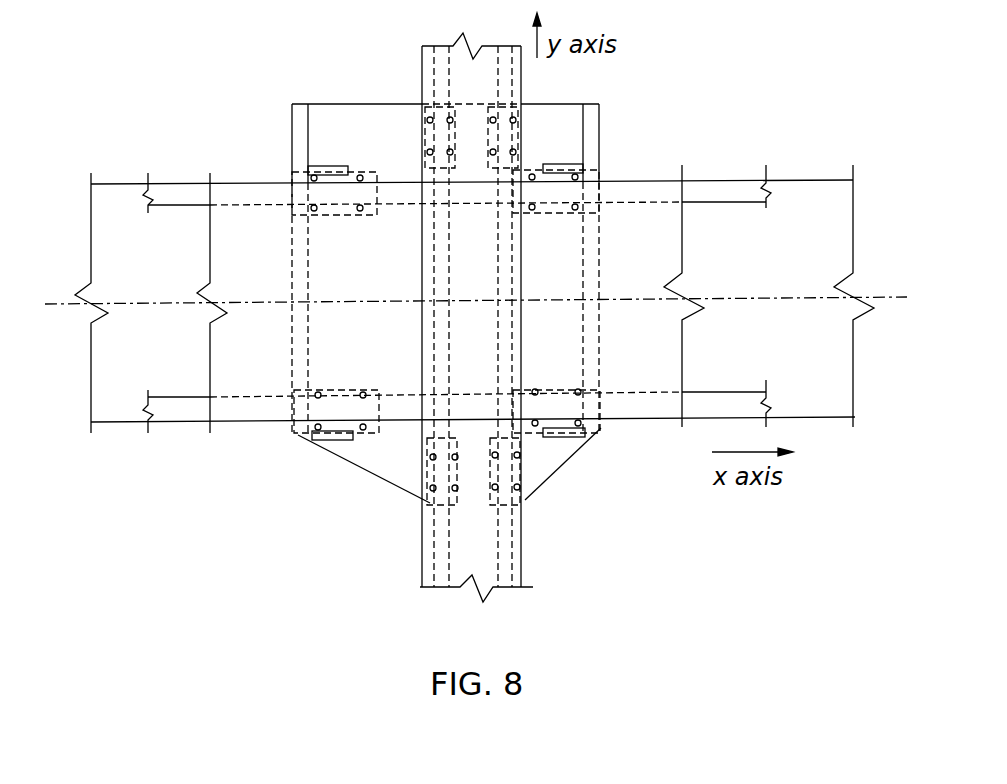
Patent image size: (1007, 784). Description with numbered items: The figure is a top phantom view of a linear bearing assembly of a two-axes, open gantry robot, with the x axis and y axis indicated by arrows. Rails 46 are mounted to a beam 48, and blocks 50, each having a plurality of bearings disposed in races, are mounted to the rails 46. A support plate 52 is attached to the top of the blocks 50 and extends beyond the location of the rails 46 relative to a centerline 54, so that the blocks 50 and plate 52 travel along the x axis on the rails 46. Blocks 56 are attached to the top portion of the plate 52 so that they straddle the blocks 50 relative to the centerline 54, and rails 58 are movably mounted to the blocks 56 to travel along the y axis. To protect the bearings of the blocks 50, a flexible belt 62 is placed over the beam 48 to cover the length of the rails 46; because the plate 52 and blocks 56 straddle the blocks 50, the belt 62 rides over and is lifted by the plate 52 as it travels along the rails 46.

The rails 46 is at (727, 188).
The beam 48 is at (788, 263).
The blocks 50 is at (322, 197).
The support plate 52 is at (352, 112).
The centerline 54 is at (177, 306).
The blocks 56 is at (427, 128).
The rails 58 is at (433, 568).
The flexible belt 62 is at (268, 268).